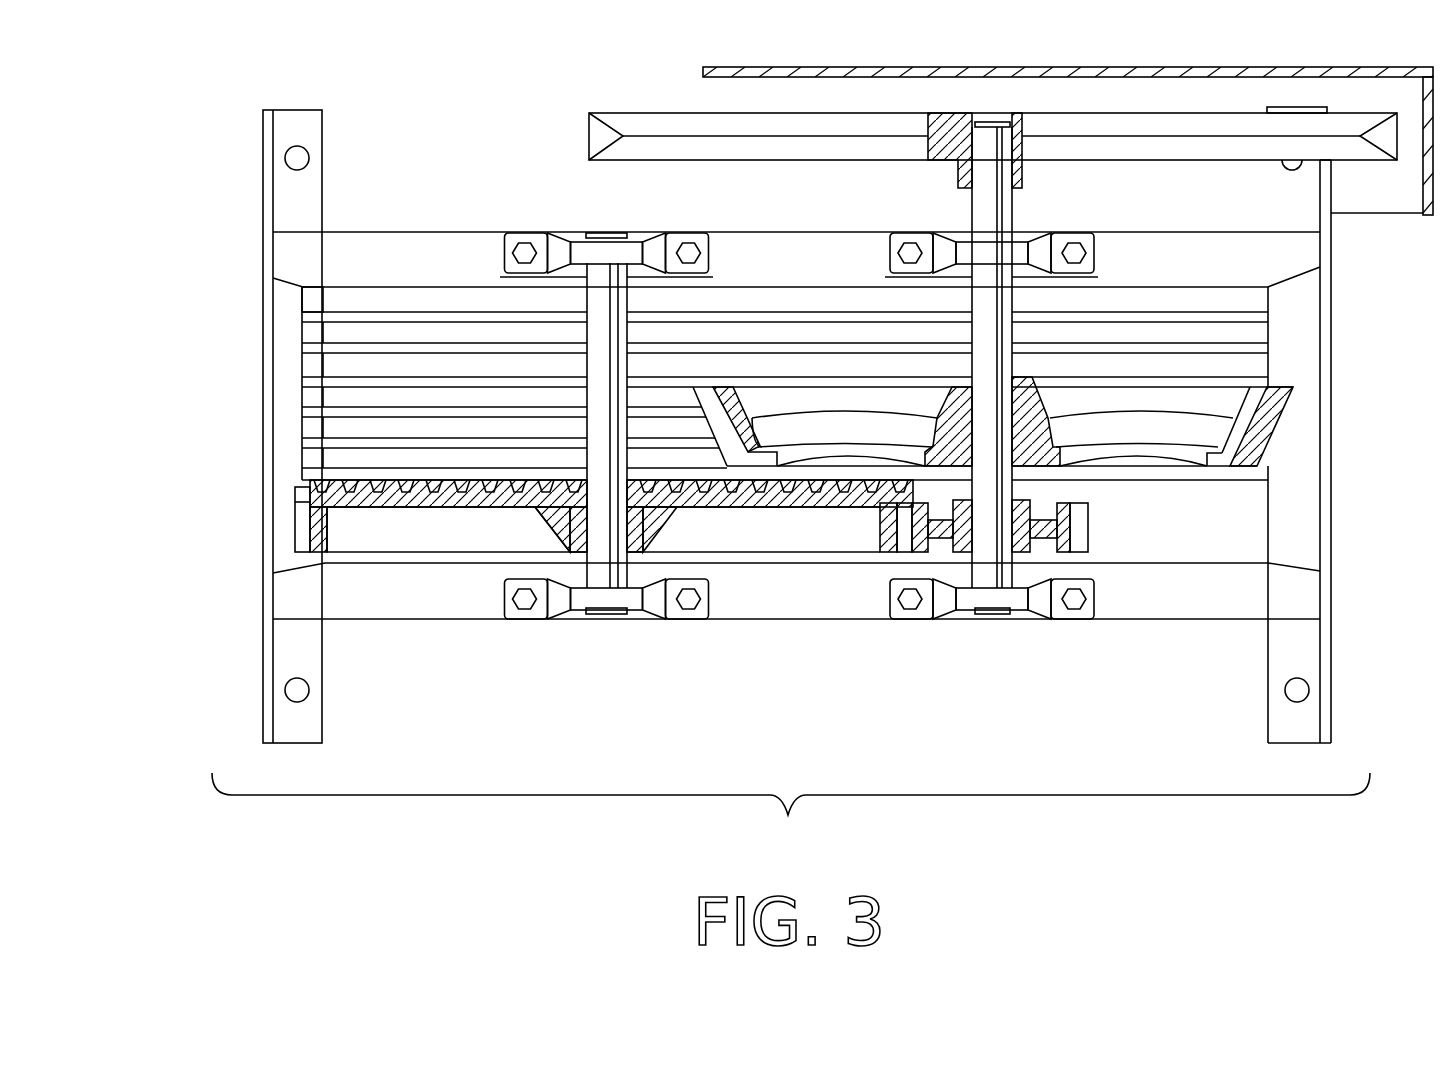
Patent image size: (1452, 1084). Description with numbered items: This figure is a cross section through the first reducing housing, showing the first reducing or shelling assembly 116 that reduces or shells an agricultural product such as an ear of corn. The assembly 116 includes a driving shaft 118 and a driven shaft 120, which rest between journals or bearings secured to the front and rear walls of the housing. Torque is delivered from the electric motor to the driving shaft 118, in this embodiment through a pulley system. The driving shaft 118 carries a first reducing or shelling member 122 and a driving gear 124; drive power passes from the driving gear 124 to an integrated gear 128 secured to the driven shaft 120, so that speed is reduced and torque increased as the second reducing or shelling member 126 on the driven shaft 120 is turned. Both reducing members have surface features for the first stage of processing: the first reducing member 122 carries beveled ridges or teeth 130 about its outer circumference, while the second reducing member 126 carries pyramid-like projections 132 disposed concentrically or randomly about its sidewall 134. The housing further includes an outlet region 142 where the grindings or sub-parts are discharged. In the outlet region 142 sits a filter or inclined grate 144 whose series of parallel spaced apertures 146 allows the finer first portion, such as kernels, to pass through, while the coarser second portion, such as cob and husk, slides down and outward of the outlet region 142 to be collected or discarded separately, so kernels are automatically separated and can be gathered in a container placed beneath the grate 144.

The first reducing or shelling assembly 116 is at (791, 816).
The driving shaft 118 is at (1003, 213).
The driven shaft 120 is at (612, 262).
The first reducing or shelling member 122 is at (1278, 400).
The driving gear 124 is at (1080, 535).
The second reducing or shelling member 126 is at (383, 528).
The integrated gear 128 is at (868, 530).
The beveled ridges or teeth 130 is at (1270, 437).
The pyramid-like projections 132 is at (385, 500).
The sidewall 134 is at (395, 503).
The outlet region 142 is at (276, 329).
The filter or inclined grate 144 is at (380, 318).
The parallel spaced apertures 146 is at (445, 330).